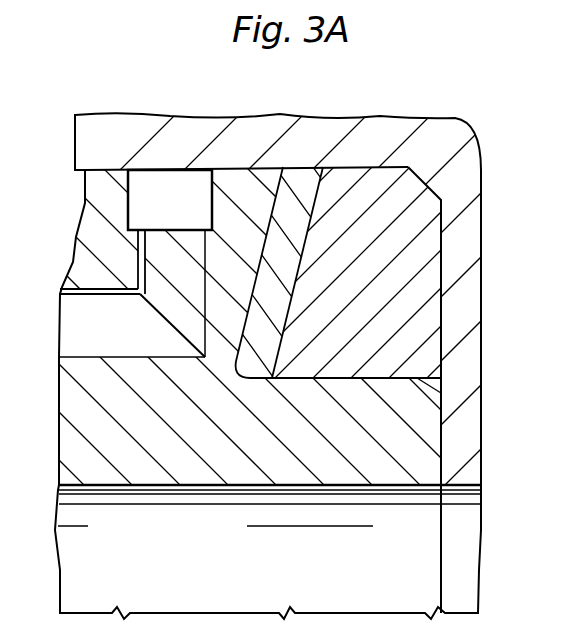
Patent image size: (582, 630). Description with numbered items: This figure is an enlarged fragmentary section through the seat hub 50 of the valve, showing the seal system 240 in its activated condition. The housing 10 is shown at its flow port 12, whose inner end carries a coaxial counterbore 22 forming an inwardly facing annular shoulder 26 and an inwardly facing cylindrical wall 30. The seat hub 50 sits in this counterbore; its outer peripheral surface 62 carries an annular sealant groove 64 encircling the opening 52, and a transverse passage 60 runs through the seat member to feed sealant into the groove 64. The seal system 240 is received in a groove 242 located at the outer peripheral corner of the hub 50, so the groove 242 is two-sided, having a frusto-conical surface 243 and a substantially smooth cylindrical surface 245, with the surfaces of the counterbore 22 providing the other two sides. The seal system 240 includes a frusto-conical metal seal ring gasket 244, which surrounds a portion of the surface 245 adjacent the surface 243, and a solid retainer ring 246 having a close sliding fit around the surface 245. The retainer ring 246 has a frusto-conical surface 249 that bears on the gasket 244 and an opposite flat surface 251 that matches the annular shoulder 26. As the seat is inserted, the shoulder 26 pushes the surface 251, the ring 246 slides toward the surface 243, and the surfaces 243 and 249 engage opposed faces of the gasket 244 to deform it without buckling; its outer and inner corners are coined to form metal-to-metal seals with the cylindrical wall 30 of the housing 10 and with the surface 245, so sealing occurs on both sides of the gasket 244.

The valve housing 10 is at (344, 100).
The flow port 12 is at (469, 550).
The counterbore 22 is at (75, 192).
The annular shoulder 26 is at (440, 267).
The cylindrical wall 30 is at (234, 170).
The seat hub 50 is at (57, 380).
The opening 52 is at (163, 487).
The transverse passage 60 is at (118, 338).
The outer peripheral surface 62 is at (247, 168).
The annular sealant groove 64 is at (178, 210).
The seal system 240 is at (380, 338).
The groove 242 is at (425, 177).
The frusto-conical surface 243 is at (248, 303).
The metal seal ring gasket 244 is at (298, 187).
The cylindrical surface 245 is at (353, 376).
The retainer ring 246 is at (384, 247).
The retainer ring surface 249 is at (300, 263).
The flat surface 251 is at (441, 300).